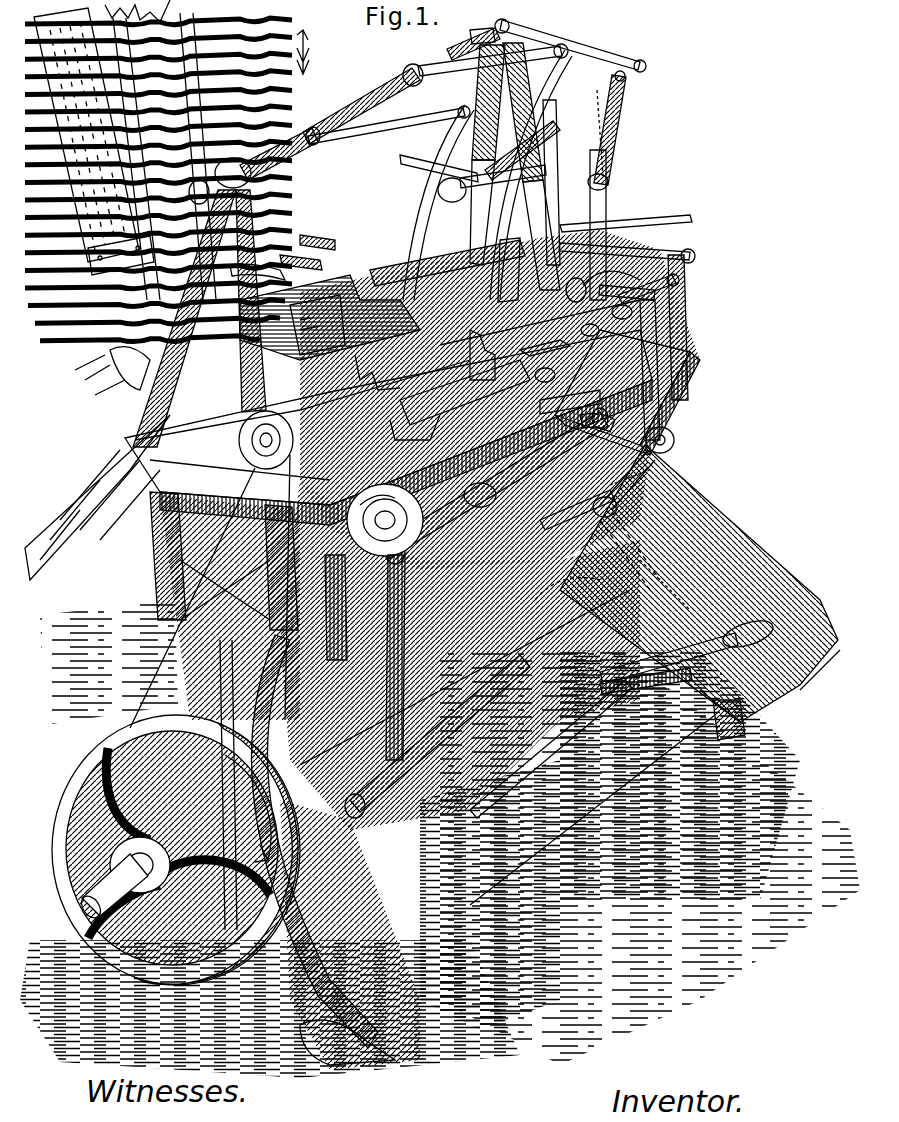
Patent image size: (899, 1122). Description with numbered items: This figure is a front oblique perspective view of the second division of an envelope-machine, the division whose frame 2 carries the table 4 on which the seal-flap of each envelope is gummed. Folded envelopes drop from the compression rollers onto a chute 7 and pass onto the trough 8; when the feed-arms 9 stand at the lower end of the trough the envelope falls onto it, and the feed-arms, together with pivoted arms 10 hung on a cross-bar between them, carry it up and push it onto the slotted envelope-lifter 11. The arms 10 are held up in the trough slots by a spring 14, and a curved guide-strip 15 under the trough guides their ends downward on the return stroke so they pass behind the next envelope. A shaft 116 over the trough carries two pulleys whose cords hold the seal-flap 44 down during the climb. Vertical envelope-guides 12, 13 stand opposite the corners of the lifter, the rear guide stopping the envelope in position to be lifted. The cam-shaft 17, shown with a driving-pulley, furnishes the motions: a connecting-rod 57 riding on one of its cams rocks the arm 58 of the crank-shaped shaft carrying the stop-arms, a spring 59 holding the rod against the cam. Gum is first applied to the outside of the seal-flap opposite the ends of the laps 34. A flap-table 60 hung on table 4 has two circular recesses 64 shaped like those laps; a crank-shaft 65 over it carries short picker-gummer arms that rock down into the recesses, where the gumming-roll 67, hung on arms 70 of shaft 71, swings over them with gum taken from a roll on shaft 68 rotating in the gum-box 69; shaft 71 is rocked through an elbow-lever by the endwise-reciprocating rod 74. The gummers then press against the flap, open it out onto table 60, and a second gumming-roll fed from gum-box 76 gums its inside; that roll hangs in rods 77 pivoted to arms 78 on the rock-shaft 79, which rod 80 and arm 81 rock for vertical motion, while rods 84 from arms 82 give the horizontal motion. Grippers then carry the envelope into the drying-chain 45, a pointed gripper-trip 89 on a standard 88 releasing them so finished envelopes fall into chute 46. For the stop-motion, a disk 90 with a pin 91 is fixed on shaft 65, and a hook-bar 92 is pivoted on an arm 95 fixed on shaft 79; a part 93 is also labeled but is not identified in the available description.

The frame 2 is at (170, 582).
The table 4 is at (150, 490).
The chute 7 is at (428, 363).
The trough 8 is at (700, 583).
The feed-arms 9 is at (690, 478).
The pivoted arms 10 is at (505, 377).
The slotted envelope-lifter 11 is at (665, 576).
The vertical envelope-guide 12 is at (540, 351).
The vertical envelope-guide 13 is at (572, 545).
The spring 14 is at (650, 650).
The curved guide-strip 15 is at (507, 717).
The cam-shaft 17 is at (176, 850).
The envelope-lap 34 is at (540, 322).
The seal-flap 44 is at (460, 400).
The drying-chain 45 is at (298, 180).
The chute 46 is at (75, 448).
The connecting-rod 57 is at (630, 312).
The arm 58 is at (627, 281).
The spring 59 is at (648, 282).
The flap-table 60 is at (494, 486).
The circular recesses 64 is at (464, 465).
The crank-shaft 65 is at (510, 270).
The gumming-roll 67 is at (577, 407).
The shaft 68 is at (385, 520).
The gum-box 69 is at (660, 350).
The arms 70 is at (604, 225).
The shaft 71 is at (612, 97).
The rod 74 is at (447, 263).
The gum-box 76 is at (292, 378).
The rods 77 is at (548, 72).
The arms 78 is at (438, 94).
The rock-shaft 79 is at (363, 104).
The rod 80 is at (499, 182).
The arm 81 is at (460, 46).
The arms 82 is at (575, 410).
The rods 84 is at (612, 248).
The standard 88 is at (320, 230).
The gripper-trip 89 is at (310, 255).
The disk 90 is at (576, 295).
The pin 91 is at (592, 324).
The hook-bar 92 is at (608, 136).
The bar 93 is at (603, 228).
The arm 95 is at (575, 52).
The shaft 116 is at (630, 484).